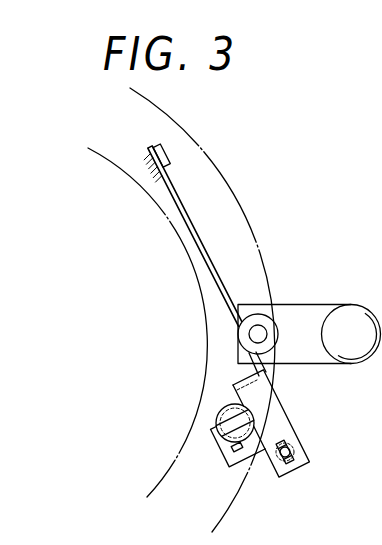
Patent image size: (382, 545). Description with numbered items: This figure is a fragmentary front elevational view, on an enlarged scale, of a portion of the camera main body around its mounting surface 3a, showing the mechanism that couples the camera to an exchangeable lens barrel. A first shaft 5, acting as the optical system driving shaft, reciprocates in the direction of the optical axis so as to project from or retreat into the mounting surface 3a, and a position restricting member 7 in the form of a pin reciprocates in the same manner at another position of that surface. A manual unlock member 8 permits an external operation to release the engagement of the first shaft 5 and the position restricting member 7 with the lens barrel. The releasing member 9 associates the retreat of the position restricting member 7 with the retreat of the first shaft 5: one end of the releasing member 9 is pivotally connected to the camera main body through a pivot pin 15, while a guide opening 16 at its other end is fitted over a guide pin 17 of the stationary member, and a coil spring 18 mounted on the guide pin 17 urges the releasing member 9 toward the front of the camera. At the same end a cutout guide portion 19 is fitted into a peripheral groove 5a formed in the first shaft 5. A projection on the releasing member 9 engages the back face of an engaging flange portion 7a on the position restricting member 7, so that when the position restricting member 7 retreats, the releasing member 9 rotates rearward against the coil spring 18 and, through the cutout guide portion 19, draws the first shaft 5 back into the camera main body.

The mounting surface 3a is at (217, 188).
The first shaft 5 is at (216, 412).
The peripheral groove 5a is at (224, 404).
The position restricting member 7 is at (251, 313).
The engaging flange portion 7a is at (271, 319).
The manual unlock member 8 is at (353, 314).
The releasing member 9 is at (205, 246).
The pivot pin 15 is at (169, 160).
The guide opening 16 is at (289, 441).
The guide pin 17 is at (306, 459).
The coil spring 18 is at (274, 462).
The cutout guide portion 19 is at (231, 447).